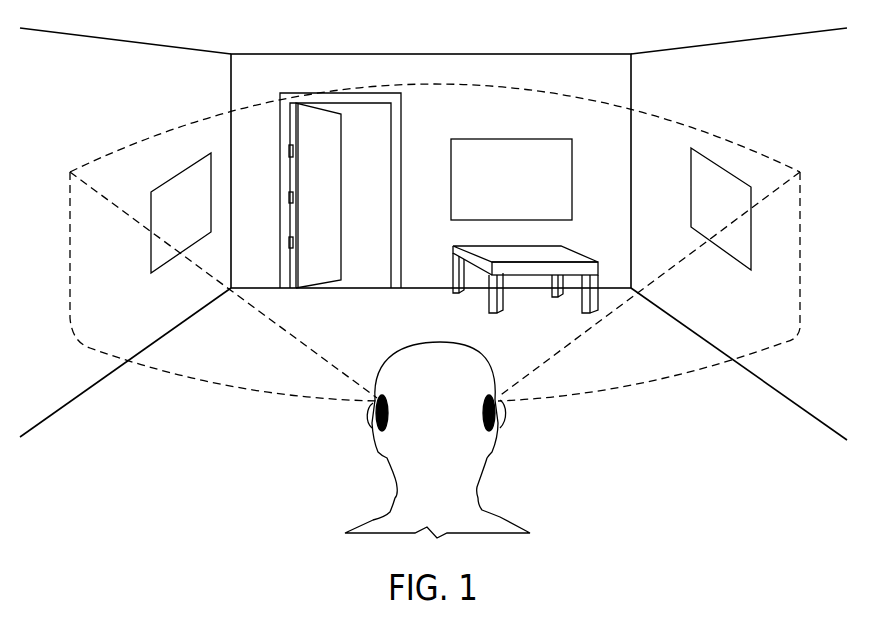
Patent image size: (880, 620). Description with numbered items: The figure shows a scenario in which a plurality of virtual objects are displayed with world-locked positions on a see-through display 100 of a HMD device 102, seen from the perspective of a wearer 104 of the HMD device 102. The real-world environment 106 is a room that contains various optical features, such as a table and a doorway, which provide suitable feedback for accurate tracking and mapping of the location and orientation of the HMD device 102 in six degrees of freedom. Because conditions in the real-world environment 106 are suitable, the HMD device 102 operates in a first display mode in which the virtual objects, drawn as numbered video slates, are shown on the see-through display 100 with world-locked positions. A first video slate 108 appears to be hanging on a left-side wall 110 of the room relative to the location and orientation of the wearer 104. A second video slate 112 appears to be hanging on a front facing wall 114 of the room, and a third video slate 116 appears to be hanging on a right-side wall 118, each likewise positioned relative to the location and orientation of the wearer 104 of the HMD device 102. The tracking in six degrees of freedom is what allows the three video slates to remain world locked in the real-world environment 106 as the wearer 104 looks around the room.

The see-through display 100 is at (232, 388).
The HMD device 102 is at (376, 412).
The wearer 104 is at (453, 448).
The real-world environment 106 is at (433, 230).
The first video slate 108 is at (166, 181).
The left-side wall 110 is at (121, 81).
The second video slate 112 is at (521, 139).
The front facing wall 114 is at (596, 81).
The third video slate 116 is at (691, 182).
The right-side wall 118 is at (753, 100).